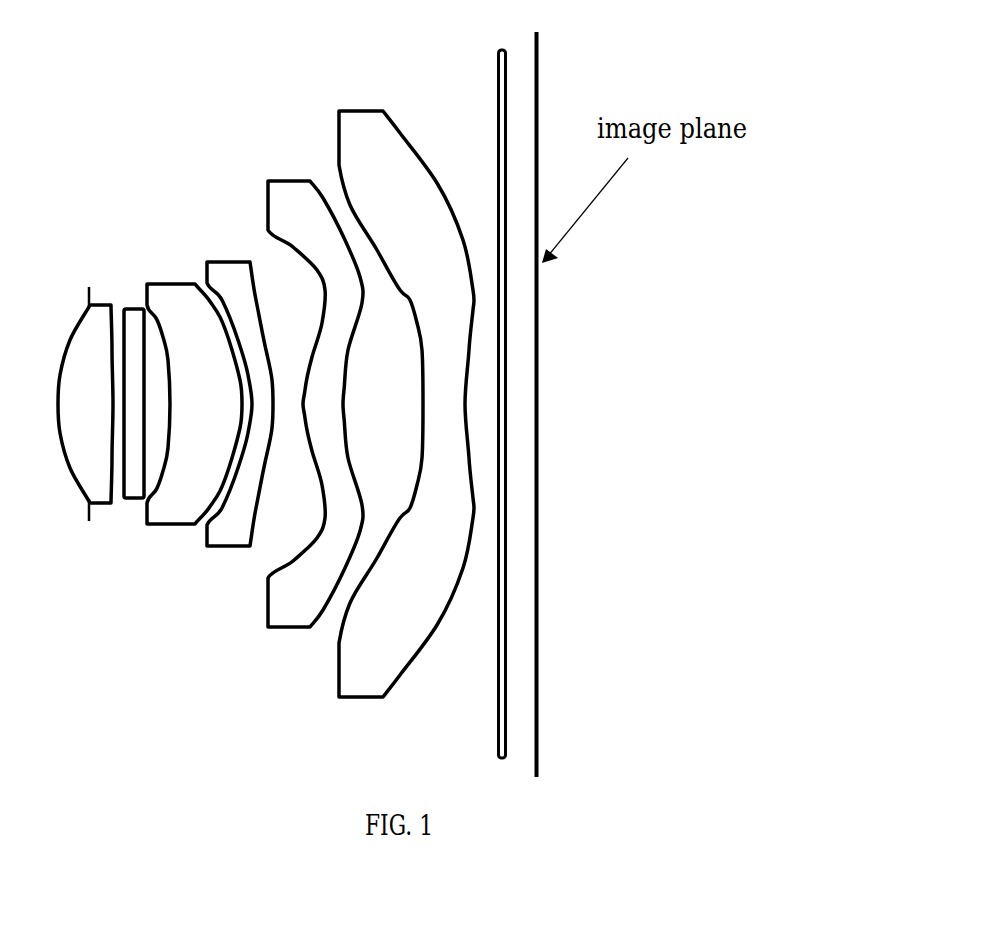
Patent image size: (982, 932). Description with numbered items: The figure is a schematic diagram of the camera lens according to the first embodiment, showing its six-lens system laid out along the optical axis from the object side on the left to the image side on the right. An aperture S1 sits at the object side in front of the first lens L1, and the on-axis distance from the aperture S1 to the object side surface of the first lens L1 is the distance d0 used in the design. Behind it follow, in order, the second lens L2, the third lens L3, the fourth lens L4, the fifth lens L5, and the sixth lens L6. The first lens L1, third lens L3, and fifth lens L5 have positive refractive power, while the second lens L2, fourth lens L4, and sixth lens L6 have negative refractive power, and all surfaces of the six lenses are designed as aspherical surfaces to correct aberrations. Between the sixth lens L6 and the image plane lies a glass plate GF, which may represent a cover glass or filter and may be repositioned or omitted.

The aperture S1 is at (89, 266).
The first lens L1 is at (81, 383).
The second lens L2 is at (132, 373).
The third lens L3 is at (194, 381).
The fourth lens L4 is at (240, 384).
The fifth lens L5 is at (302, 390).
The sixth lens L6 is at (393, 389).
The glass plate GF is at (489, 388).